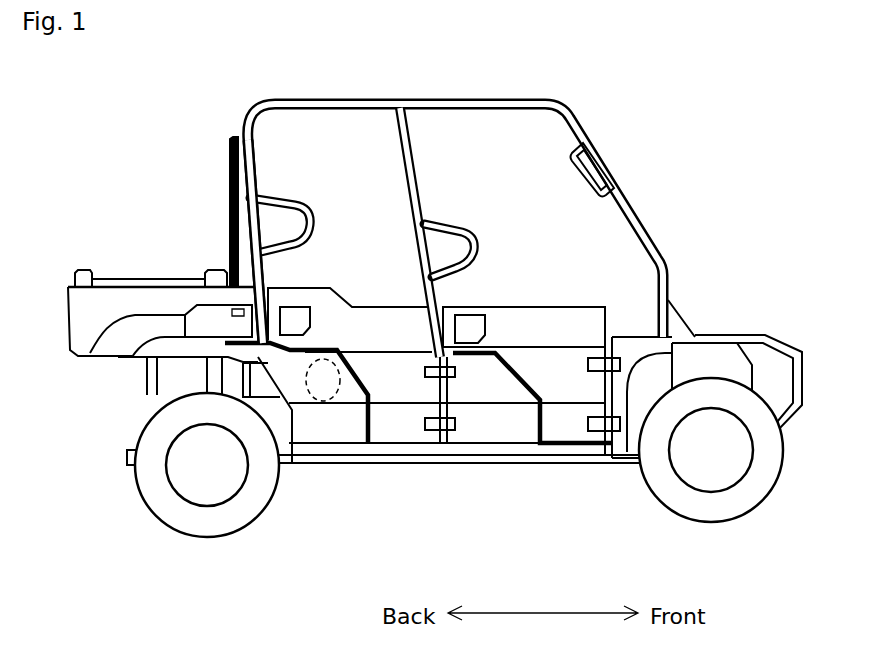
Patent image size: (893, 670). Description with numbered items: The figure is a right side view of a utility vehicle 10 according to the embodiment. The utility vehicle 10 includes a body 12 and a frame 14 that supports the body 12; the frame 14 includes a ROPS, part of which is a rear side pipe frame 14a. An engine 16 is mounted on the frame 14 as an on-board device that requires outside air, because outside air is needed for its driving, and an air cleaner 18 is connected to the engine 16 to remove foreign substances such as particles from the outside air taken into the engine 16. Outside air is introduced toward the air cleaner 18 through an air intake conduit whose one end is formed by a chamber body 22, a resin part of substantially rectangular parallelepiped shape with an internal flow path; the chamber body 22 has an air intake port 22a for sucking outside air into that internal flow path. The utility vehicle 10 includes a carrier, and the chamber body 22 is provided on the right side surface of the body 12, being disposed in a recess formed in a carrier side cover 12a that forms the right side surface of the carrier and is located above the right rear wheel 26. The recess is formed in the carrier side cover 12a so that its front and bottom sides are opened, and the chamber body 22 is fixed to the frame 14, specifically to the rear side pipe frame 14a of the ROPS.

The utility vehicle 10 is at (692, 225).
The body 12 is at (513, 432).
The carrier side cover 12a is at (121, 347).
The frame 14 is at (470, 461).
The rear side pipe frame 14a is at (247, 225).
The engine 16 is at (280, 440).
The air cleaner 18 is at (338, 397).
The chamber body 22 is at (250, 298).
The air intake port 22a is at (243, 293).
The right rear wheel 26 is at (222, 481).